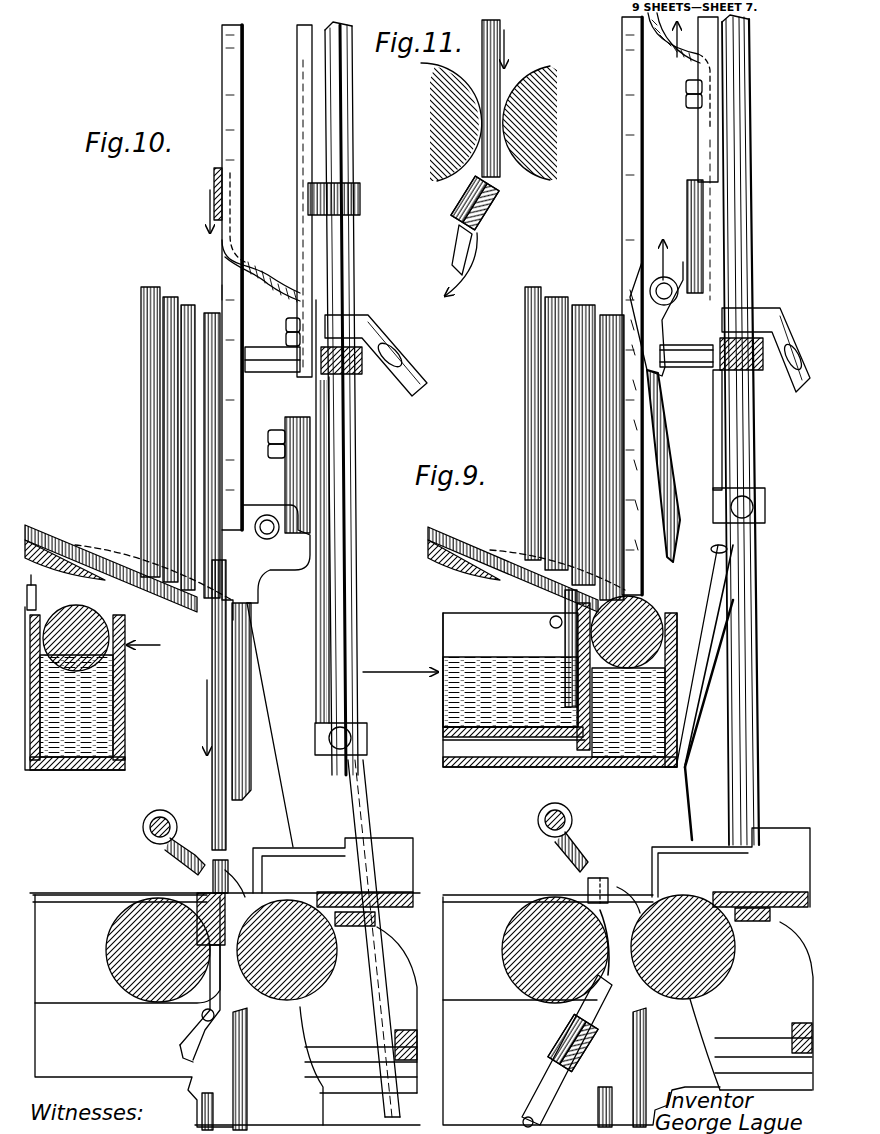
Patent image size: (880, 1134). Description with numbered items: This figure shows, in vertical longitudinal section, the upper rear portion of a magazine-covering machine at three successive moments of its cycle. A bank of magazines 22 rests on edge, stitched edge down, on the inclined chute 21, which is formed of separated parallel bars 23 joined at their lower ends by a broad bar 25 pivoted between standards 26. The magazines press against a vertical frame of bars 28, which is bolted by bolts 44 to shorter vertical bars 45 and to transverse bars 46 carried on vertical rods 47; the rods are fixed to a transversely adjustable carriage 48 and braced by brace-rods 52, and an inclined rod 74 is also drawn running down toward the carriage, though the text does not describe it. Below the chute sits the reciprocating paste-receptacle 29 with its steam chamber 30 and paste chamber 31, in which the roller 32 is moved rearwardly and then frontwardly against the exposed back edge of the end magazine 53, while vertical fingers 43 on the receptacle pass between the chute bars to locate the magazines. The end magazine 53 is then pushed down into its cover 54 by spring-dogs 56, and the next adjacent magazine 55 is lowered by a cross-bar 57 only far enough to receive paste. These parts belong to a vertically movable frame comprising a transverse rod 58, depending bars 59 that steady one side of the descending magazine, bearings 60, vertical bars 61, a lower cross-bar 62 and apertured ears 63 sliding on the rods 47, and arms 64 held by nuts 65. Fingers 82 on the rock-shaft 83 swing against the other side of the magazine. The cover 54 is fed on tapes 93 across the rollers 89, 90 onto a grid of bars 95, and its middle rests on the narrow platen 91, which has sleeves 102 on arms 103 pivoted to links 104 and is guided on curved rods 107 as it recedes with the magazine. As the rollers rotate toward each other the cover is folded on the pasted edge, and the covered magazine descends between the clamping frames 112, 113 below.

In FIG. 10, the inclined chute 21 is at (58, 536).
In FIG. 9, the inclined chute 21 is at (462, 545).
In FIG. 10, the magazines 22 is at (141, 332).
In FIG. 9, the magazines 22 is at (553, 443).
In FIG. 9, the parallel separated bars 23 is at (510, 669).
In FIG. 10, the broad bar 25 is at (90, 548).
In FIG. 9, the broad bar 25 is at (455, 570).
In FIG. 10, the standards 26 is at (225, 968).
In FIG. 9, the standards 26 is at (581, 963).
In FIG. 10, the vertical transverse frame of bars 28 is at (222, 72).
In FIG. 9, the vertical transverse frame of bars 28 is at (622, 52).
In FIG. 10, the paste-receptacle 29 is at (38, 766).
In FIG. 9, the paste-receptacle 29 is at (560, 685).
In FIG. 10, the hot water or steam chamber 30 is at (28, 770).
In FIG. 9, the hot water or steam chamber 30 is at (514, 743).
In FIG. 10, the paste chamber 31 is at (90, 745).
In FIG. 9, the paste chamber 31 is at (635, 745).
In FIG. 10, the roller 32 is at (88, 628).
In FIG. 9, the roller 32 is at (640, 622).
In FIG. 10, the vertical fingers 43 is at (38, 614).
In FIG. 9, the vertical fingers 43 is at (560, 603).
In FIG. 10, the bolts 44 is at (275, 372).
In FIG. 9, the bolts 44 is at (695, 368).
In FIG. 10, the vertical bars 45 is at (297, 205).
In FIG. 9, the vertical bars 45 is at (698, 150).
In FIG. 10, the transverse upper and lower bars 46 is at (357, 375).
In FIG. 9, the transverse upper and lower bars 46 is at (762, 372).
In FIG. 10, the vertical rods 47 is at (355, 263).
In FIG. 9, the vertical rods 47 is at (750, 241).
In FIG. 10, the carriage 48 is at (338, 853).
In FIG. 9, the carriage 48 is at (731, 856).
In FIG. 10, the brace-rods 52 is at (418, 378).
In FIG. 9, the brace-rods 52 is at (798, 315).
In FIG. 10, the end magazine 53 is at (212, 656).
In FIG. 11, the end magazine 53 is at (497, 30).
In FIG. 9, the end magazine 53 is at (622, 295).
In FIG. 10, the cover 54 is at (62, 875).
In FIG. 11, the cover 54 is at (470, 63).
In FIG. 10, the next adjacent magazine 55 is at (214, 322).
In FIG. 9, the next adjacent magazine 55 is at (595, 300).
In FIG. 10, the spring-dogs 56 is at (230, 597).
In FIG. 9, the spring-dogs 56 is at (637, 362).
In FIG. 10, the cross-bar 57 is at (214, 178).
In FIG. 10, the transverse rod 58 is at (268, 518).
In FIG. 9, the transverse rod 58 is at (674, 278).
In FIG. 10, the depending bars 59 is at (246, 705).
In FIG. 9, the depending bars 59 is at (680, 478).
In FIG. 10, the bearings 60 is at (288, 418).
In FIG. 9, the bearings 60 is at (688, 186).
In FIG. 10, the vertical bars 61 is at (316, 604).
In FIG. 9, the vertical bars 61 is at (713, 408).
In FIG. 10, the lower cross-bar 62 is at (367, 731).
In FIG. 9, the lower cross-bar 62 is at (765, 492).
In FIG. 10, the apertured ears 63 is at (352, 190).
In FIG. 10, the arms 64 is at (262, 268).
In FIG. 9, the arms 64 is at (679, 70).
In FIG. 9, the nuts 65 is at (686, 82).
In FIG. 10, the inclined rod 74 is at (370, 836).
In FIG. 9, the inclined rod 74 is at (685, 752).
In FIG. 10, the arms or fingers 82 is at (192, 820).
In FIG. 9, the arms or fingers 82 is at (592, 870).
In FIG. 10, the rock-shaft 83 is at (143, 835).
In FIG. 9, the rock-shaft 83 is at (540, 830).
In FIG. 10, the roller 89 is at (108, 945).
In FIG. 11, the roller 89 is at (443, 123).
In FIG. 9, the roller 89 is at (505, 965).
In FIG. 10, the roller 90 is at (322, 985).
In FIG. 11, the roller 90 is at (535, 123).
In FIG. 9, the roller 90 is at (722, 980).
In FIG. 10, the platen 91 is at (228, 893).
In FIG. 11, the platen 91 is at (490, 205).
In FIG. 9, the platen 91 is at (593, 1035).
In FIG. 10, the tapes or belts 93 is at (75, 897).
In FIG. 9, the tapes or belts 93 is at (497, 897).
In FIG. 10, the grid of bars 95 is at (407, 908).
In FIG. 9, the grid of bars 95 is at (775, 898).
In FIG. 10, the sleeves 102 is at (208, 896).
In FIG. 11, the sleeves 102 is at (460, 200).
In FIG. 9, the sleeves 102 is at (555, 1038).
In FIG. 10, the arms 103 is at (205, 995).
In FIG. 11, the arms 103 is at (458, 248).
In FIG. 9, the arms 103 is at (540, 1080).
In FIG. 10, the links 104 is at (185, 1035).
In FIG. 9, the links 104 is at (520, 1130).
In FIG. 10, the stationary curved rods 107 is at (205, 880).
In FIG. 9, the stationary curved rods 107 is at (622, 885).
In FIG. 10, the clamping frame 112 is at (200, 1100).
In FIG. 9, the clamping frame 112 is at (598, 1110).
In FIG. 10, the clamping frame 113 is at (248, 1075).
In FIG. 9, the clamping frame 113 is at (647, 1083).